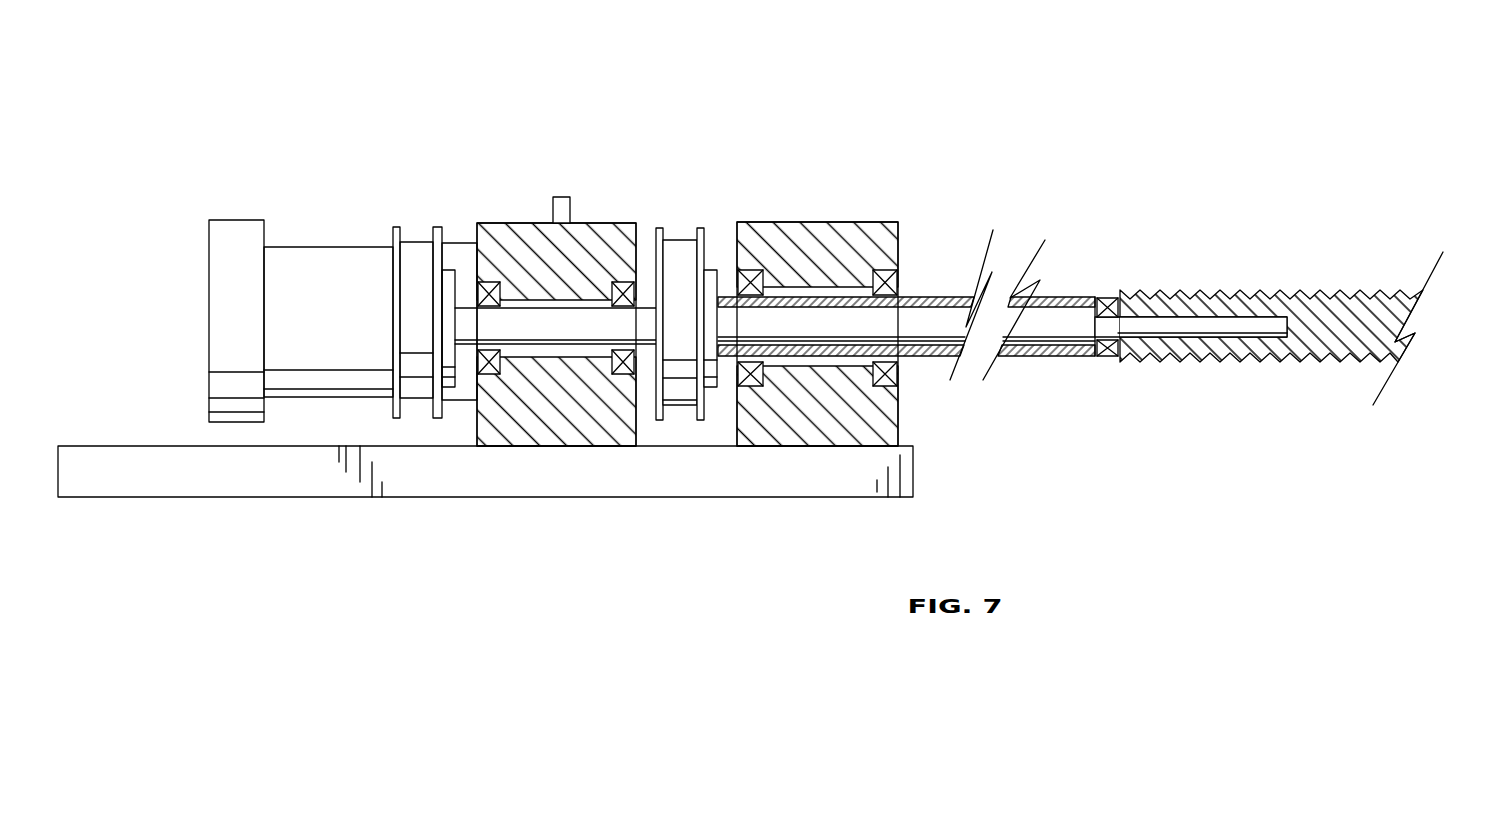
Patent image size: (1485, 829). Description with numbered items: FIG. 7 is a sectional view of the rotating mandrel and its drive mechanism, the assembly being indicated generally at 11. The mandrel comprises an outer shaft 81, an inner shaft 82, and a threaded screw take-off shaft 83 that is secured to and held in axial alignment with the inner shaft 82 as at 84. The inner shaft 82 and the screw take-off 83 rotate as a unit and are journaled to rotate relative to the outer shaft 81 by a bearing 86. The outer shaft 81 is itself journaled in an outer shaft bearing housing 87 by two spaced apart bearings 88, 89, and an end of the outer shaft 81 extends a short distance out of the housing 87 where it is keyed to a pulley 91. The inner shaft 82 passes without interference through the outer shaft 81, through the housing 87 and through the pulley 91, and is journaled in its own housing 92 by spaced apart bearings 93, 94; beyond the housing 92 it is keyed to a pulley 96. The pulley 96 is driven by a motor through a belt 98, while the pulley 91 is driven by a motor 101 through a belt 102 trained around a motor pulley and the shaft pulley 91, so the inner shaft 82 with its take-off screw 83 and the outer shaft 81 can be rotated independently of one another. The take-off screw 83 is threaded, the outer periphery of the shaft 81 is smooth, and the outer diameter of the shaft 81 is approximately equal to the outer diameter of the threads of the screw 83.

The linear actuator assembly 11 is at (753, 82).
The motor 101 is at (317, 247).
The pulley 96 is at (396, 224).
The belt 98 is at (542, 303).
The housing 92 is at (588, 223).
The bearing 93 is at (493, 376).
The bearing 94 is at (620, 376).
The belt 102 is at (683, 407).
The pulley 91 is at (703, 402).
The outer shaft bearing housing 87 is at (833, 222).
The bearing 88 is at (748, 270).
The bearing 89 is at (897, 372).
The inner shaft 82 is at (993, 230).
The outer shaft 81 is at (919, 297).
The bearing 86 is at (1113, 298).
The securing location 84 is at (1113, 363).
The threaded screw take-off shaft 83 is at (1327, 363).